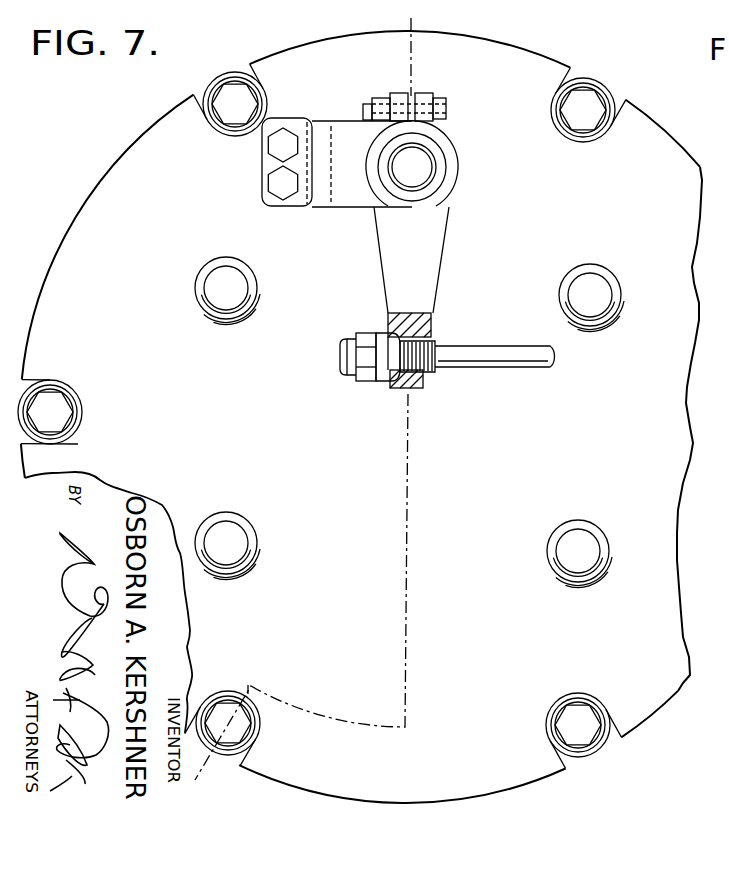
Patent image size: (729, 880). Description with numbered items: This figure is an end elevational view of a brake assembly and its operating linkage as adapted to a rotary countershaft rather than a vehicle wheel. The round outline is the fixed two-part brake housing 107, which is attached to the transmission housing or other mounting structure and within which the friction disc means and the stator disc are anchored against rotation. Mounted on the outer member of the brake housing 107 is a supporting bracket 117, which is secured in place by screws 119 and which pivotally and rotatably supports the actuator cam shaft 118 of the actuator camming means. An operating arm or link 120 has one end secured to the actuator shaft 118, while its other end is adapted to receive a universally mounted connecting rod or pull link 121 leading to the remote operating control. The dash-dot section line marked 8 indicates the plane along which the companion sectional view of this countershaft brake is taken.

The brake housing 107 is at (311, 43).
The supporting bracket 117 is at (343, 208).
The actuator cam shaft 118 is at (409, 165).
The screws 119 is at (278, 147).
The operating arm 120 is at (433, 245).
The connecting rod 121 is at (491, 352).
The section line 8- 8 is at (411, 17).